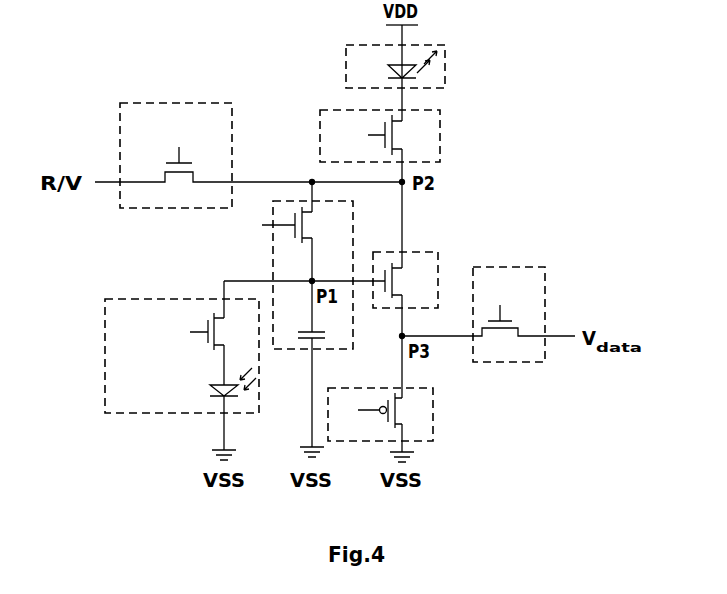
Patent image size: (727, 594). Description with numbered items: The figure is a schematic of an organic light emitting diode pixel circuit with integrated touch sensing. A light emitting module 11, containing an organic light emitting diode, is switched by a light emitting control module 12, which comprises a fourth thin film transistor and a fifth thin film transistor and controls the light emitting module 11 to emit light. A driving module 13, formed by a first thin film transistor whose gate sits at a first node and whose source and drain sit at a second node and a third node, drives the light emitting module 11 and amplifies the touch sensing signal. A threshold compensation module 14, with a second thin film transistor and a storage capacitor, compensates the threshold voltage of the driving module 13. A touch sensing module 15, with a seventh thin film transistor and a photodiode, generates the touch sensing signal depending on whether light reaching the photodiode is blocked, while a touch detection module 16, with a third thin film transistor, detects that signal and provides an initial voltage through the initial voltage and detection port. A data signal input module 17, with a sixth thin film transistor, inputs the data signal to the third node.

The light emitting module 11 is at (445, 62).
The light emitting control module 12 is at (440, 137).
The driving module 13 is at (438, 252).
The threshold compensation module 14 is at (273, 258).
The touch sensing module 15 is at (105, 352).
The touch detection module 16 is at (120, 117).
The data signal input module 17 is at (545, 290).